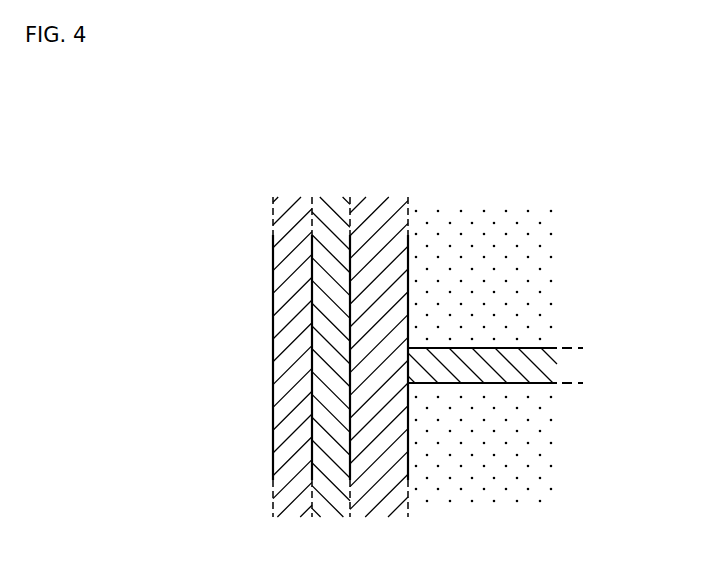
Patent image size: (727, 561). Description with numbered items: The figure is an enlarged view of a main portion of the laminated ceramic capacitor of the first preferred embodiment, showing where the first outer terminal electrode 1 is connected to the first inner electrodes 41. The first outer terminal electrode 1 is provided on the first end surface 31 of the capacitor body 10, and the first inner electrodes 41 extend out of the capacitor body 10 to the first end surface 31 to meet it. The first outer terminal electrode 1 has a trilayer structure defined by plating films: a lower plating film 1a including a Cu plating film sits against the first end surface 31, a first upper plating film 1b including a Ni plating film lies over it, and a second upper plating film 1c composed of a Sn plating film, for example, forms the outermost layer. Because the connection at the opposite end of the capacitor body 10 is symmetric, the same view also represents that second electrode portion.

The first outer terminal electrode 1 is at (253, 238).
The lower plating film 1a is at (350, 383).
The first upper plating film 1b is at (312, 410).
The second upper plating film 1c is at (273, 463).
The capacitor body 10 is at (407, 296).
The first end surface 31 is at (408, 322).
The first inner electrodes 41 is at (502, 383).